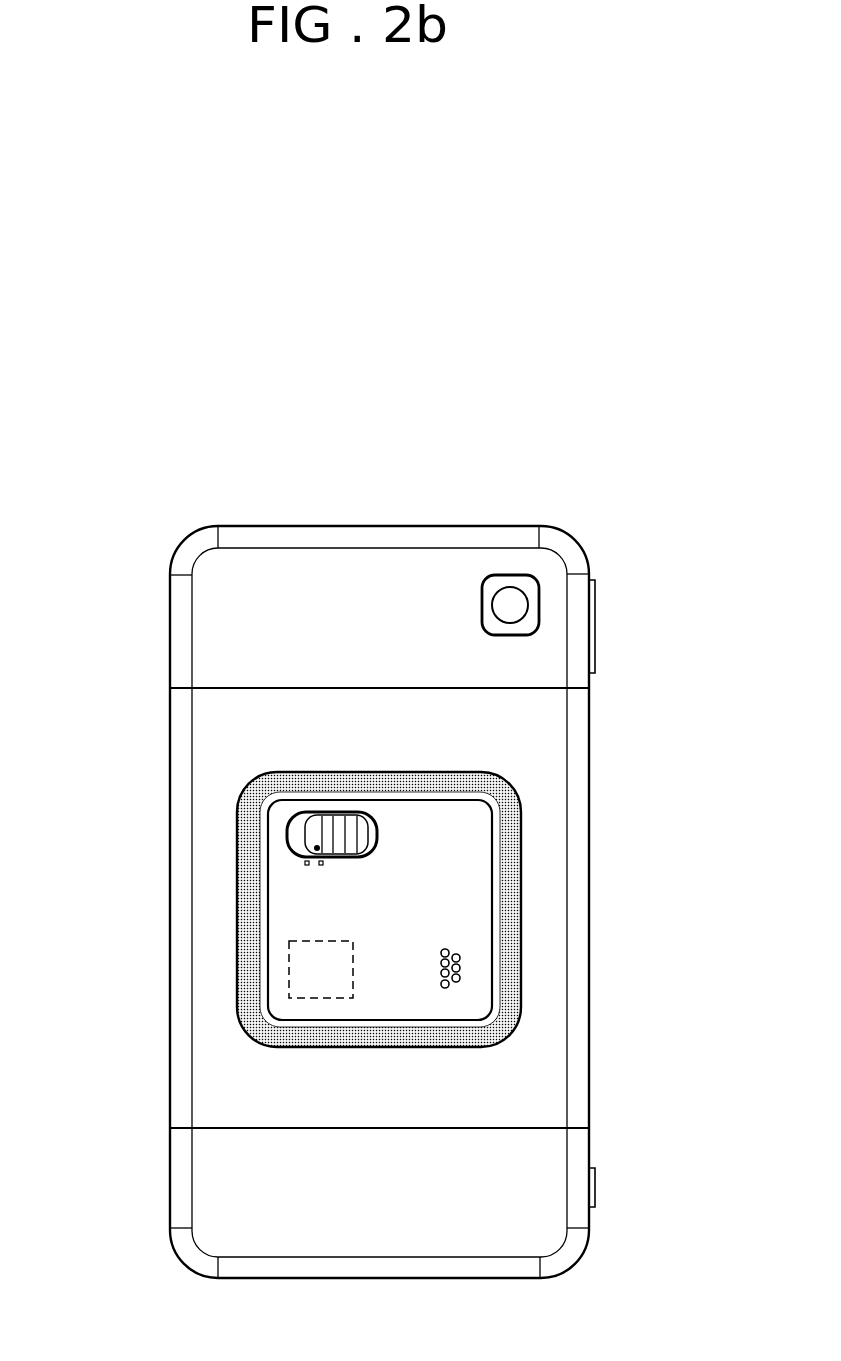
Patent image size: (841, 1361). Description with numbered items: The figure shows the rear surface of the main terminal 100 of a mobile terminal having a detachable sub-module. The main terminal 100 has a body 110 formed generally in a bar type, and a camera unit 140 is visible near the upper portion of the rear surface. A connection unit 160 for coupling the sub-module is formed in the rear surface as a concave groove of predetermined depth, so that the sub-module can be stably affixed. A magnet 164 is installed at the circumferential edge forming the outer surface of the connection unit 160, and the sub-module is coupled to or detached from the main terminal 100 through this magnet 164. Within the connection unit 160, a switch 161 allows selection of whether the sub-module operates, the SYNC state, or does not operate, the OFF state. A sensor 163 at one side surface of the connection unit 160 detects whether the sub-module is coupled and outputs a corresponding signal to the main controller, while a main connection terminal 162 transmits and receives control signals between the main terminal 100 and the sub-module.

The main terminal 100 is at (604, 470).
The body 110 is at (552, 733).
The camera unit 140 is at (512, 605).
The connection unit 160 is at (545, 815).
The switch 161 is at (323, 830).
The main connection terminal 162 is at (460, 968).
The sensor 163 is at (290, 967).
The magnet 164 is at (512, 898).